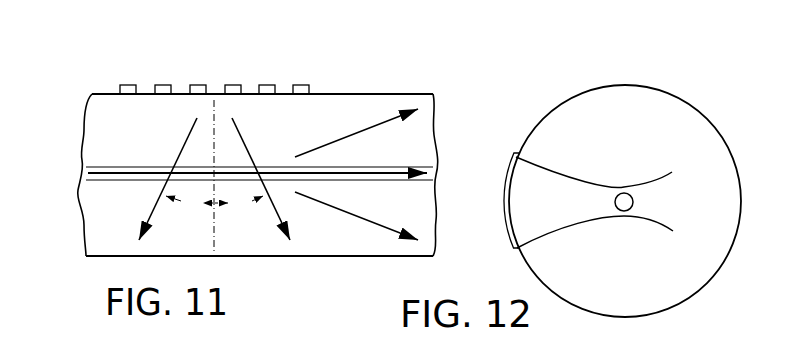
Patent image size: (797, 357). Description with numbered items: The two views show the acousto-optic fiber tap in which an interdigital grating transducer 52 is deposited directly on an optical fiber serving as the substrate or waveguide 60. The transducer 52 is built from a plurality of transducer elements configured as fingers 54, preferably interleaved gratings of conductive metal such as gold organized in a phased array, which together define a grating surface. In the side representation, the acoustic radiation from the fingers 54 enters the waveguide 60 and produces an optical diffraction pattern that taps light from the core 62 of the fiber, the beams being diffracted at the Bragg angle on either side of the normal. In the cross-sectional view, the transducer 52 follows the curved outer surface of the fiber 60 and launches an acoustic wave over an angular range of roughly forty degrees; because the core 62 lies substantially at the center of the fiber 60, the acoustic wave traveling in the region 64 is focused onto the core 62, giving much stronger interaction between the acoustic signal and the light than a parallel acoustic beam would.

In FIG. 11, the grating transducer 52 is at (108, 85).
In FIG. 12, the grating transducer 52 is at (505, 200).
In FIG. 11, the fingers 54 is at (168, 81).
In FIG. 11, the substrate 60 is at (330, 257).
In FIG. 12, the substrate 60 is at (675, 117).
In FIG. 11, the core 62 is at (112, 166).
In FIG. 12, the core 62 is at (614, 218).
In FIG. 12, the region 64 is at (560, 188).